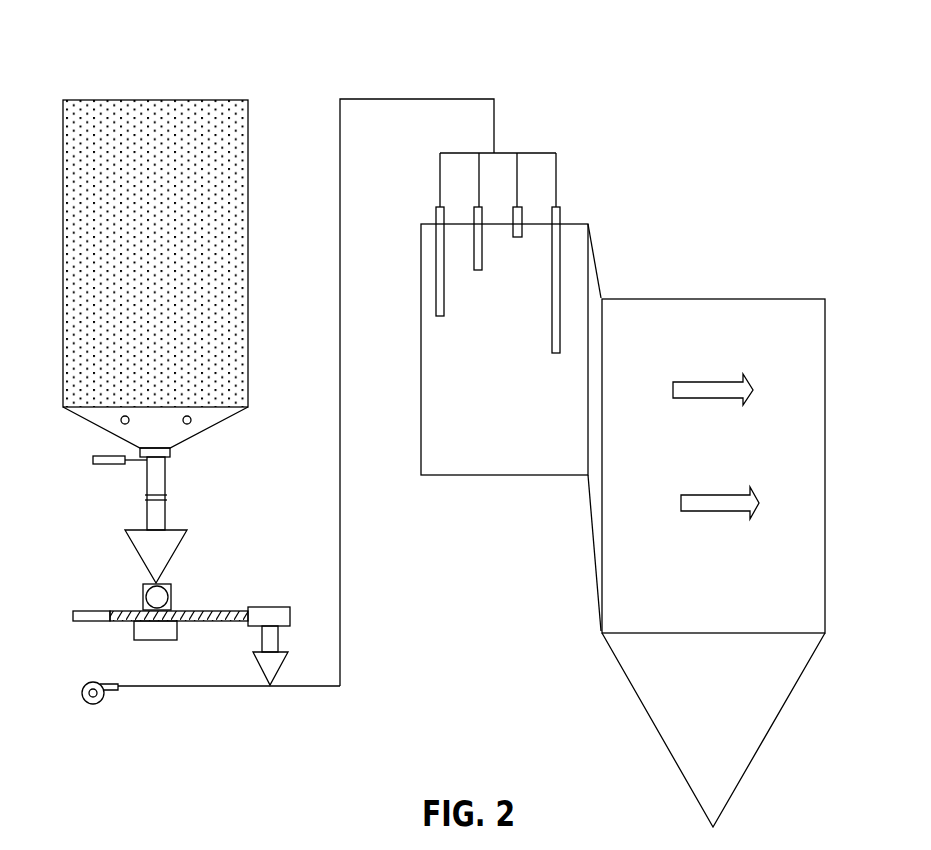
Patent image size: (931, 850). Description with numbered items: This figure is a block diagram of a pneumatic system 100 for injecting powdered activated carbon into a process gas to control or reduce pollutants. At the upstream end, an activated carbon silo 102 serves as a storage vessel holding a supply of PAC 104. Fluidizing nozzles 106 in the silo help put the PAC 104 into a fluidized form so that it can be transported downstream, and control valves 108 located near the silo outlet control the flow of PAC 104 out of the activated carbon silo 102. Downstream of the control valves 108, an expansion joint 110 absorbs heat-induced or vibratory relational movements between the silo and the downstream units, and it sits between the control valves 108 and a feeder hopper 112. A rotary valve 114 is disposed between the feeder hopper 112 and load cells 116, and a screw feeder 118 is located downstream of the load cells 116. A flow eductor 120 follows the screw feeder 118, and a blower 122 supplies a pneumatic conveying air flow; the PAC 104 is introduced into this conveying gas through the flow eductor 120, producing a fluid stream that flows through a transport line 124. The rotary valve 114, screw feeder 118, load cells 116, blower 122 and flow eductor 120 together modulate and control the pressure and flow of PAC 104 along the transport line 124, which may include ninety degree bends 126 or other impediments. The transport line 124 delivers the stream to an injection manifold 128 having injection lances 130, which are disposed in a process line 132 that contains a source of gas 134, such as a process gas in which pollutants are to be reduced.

The system 100 is at (541, 97).
The activated carbon silo 102 is at (155, 100).
The PAC 104 is at (95, 223).
The fluidizing nozzles 106 is at (188, 424).
The control valves 108 is at (108, 464).
The expansion joint 110 is at (136, 498).
The feeder hopper 112 is at (187, 530).
The rotary valve 114 is at (171, 585).
The load cells 116 is at (170, 640).
The screw feeder 118 is at (301, 624).
The flow eductor 120 is at (283, 676).
The blower 122 is at (107, 702).
The transport line 124 is at (340, 577).
The 90 degree bends 126 is at (333, 94).
The injection manifold 128 is at (520, 145).
The injection lances 130 is at (433, 252).
The process line 132 is at (618, 298).
The source of gas 134 is at (710, 398).